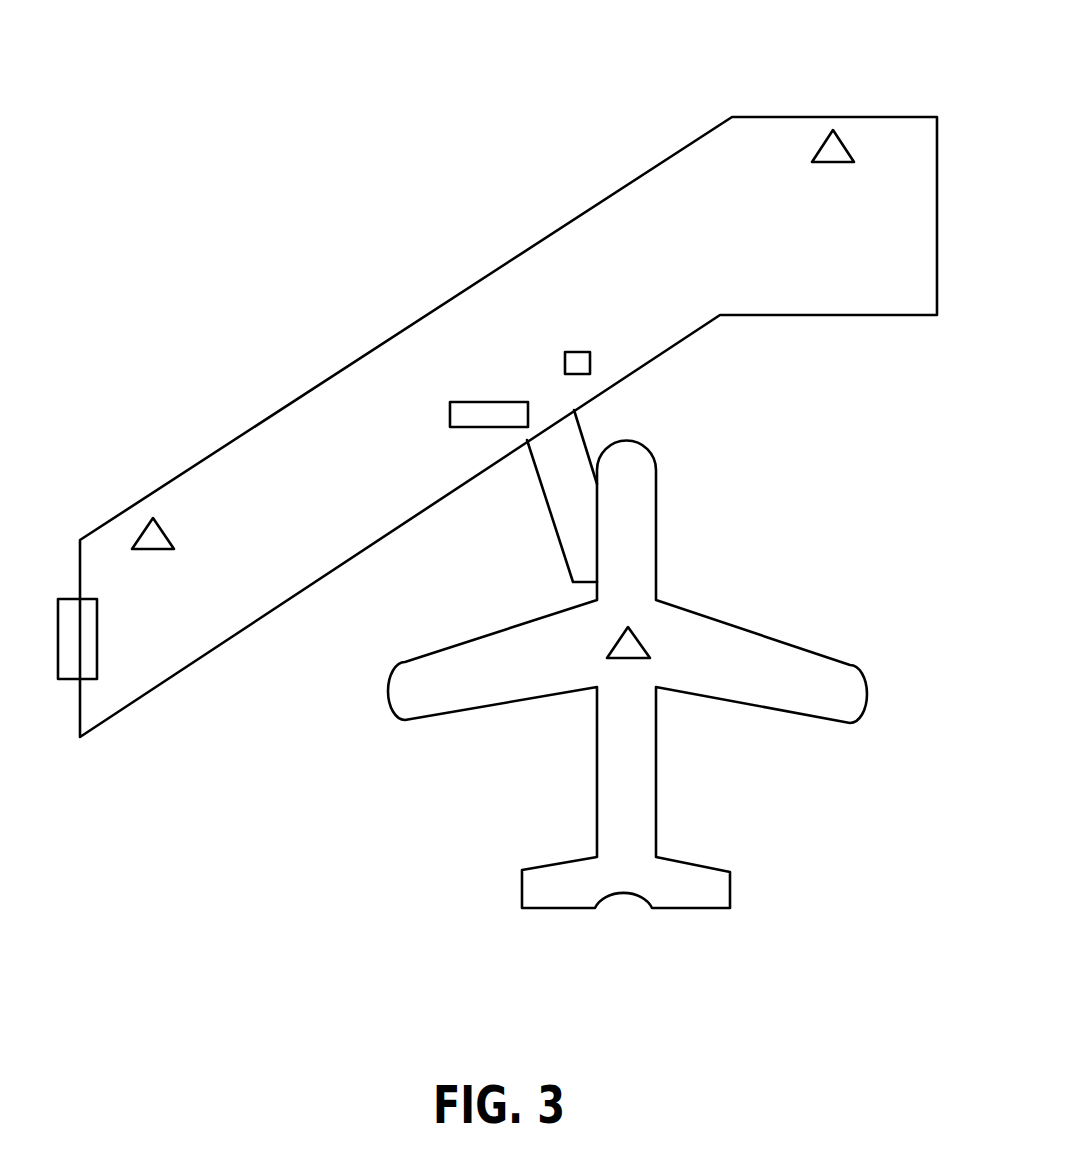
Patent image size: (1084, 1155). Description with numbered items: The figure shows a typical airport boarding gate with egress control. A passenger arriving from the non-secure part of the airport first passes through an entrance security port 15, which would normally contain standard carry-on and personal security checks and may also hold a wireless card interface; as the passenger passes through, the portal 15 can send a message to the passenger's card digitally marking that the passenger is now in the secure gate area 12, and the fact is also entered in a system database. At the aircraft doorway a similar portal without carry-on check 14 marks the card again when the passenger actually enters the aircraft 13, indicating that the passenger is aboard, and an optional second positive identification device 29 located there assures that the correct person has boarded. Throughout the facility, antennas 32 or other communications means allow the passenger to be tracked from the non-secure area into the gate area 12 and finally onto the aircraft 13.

The gate area 12 is at (217, 493).
The aircraft 13 is at (643, 503).
The portal without carry-on check 14 is at (478, 393).
The entrance security port 15 is at (107, 620).
The second positive identification device 29 is at (597, 352).
The antennas 32 is at (843, 133).